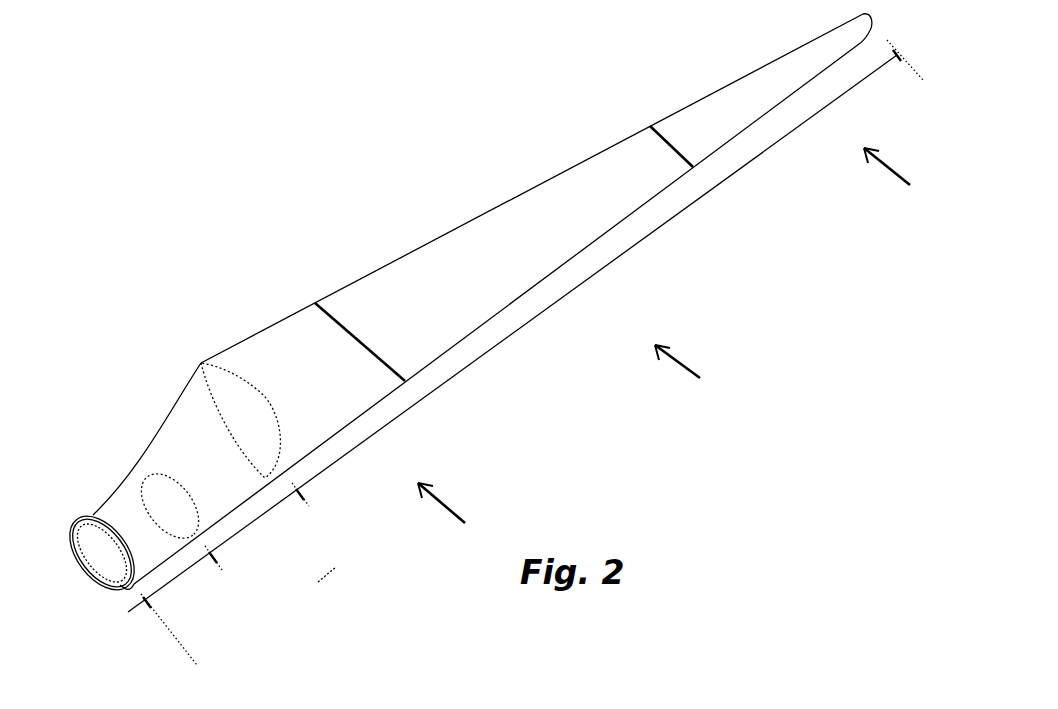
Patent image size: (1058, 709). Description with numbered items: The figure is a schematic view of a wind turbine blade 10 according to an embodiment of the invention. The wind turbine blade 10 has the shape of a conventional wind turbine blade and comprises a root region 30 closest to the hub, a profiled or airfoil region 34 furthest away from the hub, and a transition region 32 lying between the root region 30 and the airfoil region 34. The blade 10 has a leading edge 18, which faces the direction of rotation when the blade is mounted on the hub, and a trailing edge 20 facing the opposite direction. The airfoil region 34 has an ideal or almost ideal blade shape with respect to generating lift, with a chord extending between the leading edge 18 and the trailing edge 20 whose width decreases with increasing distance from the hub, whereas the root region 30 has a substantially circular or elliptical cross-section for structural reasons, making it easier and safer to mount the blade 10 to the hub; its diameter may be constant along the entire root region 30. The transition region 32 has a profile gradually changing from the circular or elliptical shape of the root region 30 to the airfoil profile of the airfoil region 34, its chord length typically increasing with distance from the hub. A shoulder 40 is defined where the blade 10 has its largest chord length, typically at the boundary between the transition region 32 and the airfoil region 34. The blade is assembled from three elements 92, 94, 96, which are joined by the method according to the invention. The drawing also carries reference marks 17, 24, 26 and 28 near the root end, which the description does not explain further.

The wind turbine blade 10 is at (332, 197).
The root end opening 17 is at (95, 541).
The leading edge 18 is at (628, 217).
The trailing edge 20 is at (523, 191).
The root end 24 is at (101, 510).
The root flange 26 is at (88, 585).
The root section 28 is at (91, 513).
The root region 30 is at (207, 562).
The transition region 32 is at (300, 498).
The airfoil region 34 is at (538, 319).
The shoulder 40 is at (201, 363).
The element 92 is at (460, 516).
The element 94 is at (697, 372).
The element 96 is at (908, 179).